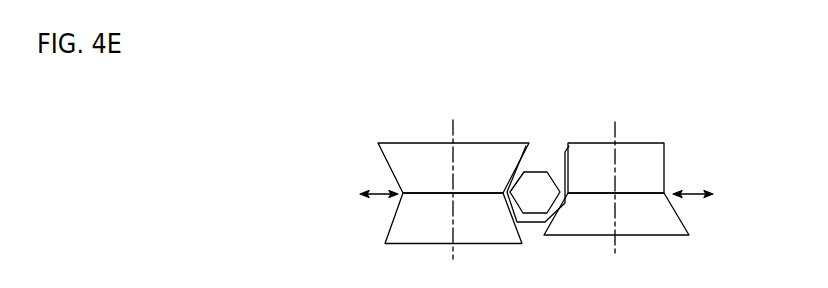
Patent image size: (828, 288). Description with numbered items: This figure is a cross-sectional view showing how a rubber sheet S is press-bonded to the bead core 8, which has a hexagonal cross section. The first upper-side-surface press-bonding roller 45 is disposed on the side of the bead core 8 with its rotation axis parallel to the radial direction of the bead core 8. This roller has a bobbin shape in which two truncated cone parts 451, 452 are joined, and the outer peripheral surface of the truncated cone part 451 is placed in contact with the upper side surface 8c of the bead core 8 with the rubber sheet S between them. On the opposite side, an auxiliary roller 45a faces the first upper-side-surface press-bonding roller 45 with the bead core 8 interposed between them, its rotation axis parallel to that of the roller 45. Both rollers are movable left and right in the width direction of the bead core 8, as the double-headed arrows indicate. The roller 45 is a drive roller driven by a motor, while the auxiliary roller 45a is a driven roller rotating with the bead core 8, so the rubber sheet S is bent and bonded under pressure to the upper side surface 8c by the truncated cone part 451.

The first upper-side-surface press-bonding roller 45 is at (418, 171).
The truncated cone part 451 is at (391, 172).
The truncated cone part 452 is at (395, 215).
The auxiliary roller 45a is at (642, 143).
The bead core 8 is at (533, 182).
The upper side surface 8c is at (511, 181).
The rubber sheet S is at (559, 155).